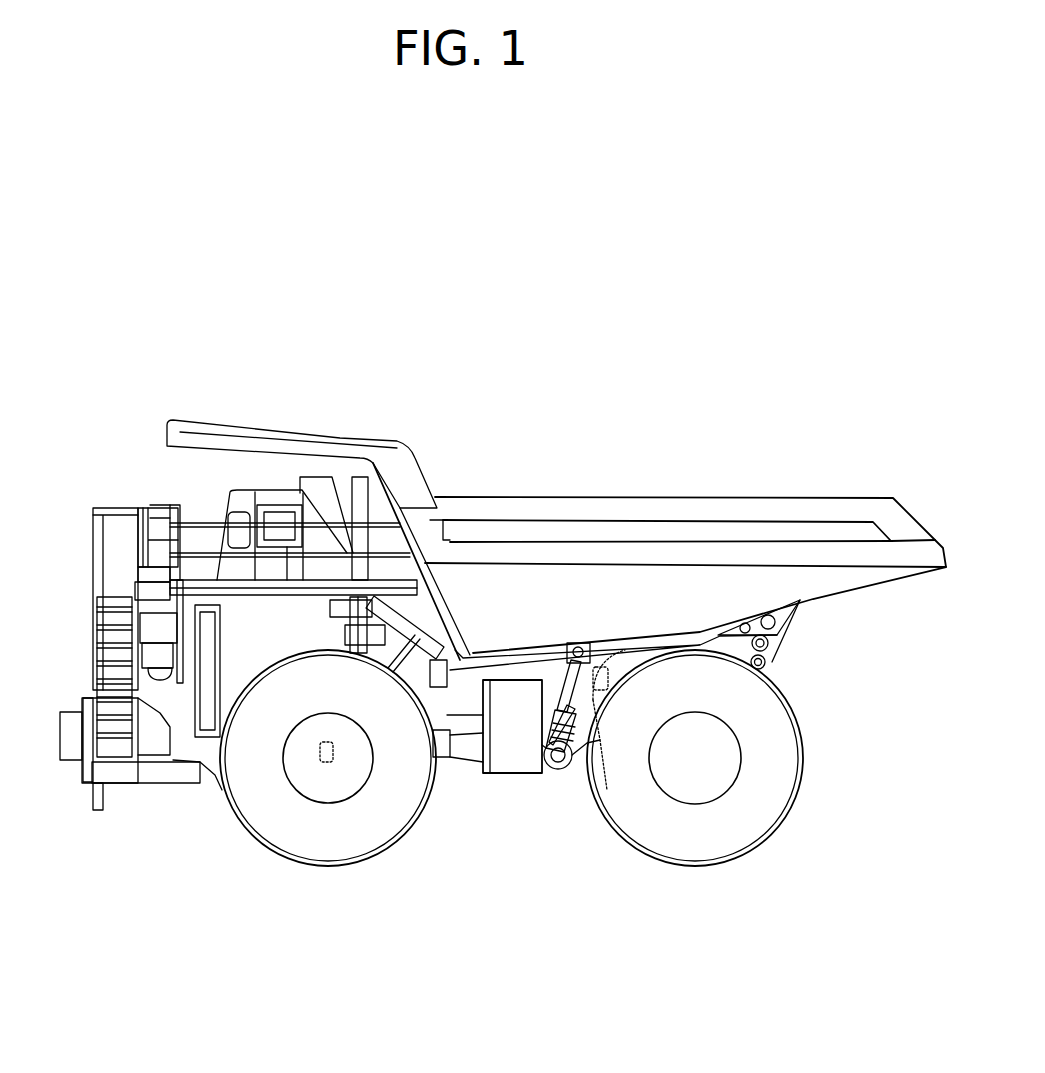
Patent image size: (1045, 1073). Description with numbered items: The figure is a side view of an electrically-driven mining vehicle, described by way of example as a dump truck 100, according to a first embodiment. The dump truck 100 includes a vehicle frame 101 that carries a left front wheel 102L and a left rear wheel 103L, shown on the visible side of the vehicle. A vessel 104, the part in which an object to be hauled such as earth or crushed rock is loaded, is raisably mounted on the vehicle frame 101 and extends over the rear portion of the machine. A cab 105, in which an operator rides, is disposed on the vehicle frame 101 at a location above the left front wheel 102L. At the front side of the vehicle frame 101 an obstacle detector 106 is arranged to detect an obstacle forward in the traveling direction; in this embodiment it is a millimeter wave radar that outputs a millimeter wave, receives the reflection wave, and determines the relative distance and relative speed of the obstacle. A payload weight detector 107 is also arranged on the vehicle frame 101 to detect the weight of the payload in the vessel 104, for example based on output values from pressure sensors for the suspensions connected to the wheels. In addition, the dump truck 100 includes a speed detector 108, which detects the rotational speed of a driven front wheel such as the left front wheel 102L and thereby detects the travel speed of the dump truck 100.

The electrically-driven mining vehicle (dump truck) 100 is at (593, 385).
The vehicle frame 101 is at (437, 708).
The left front wheel 102L is at (287, 833).
The left rear wheel 103L is at (710, 837).
The vessel 104 is at (800, 575).
The cab 105 is at (237, 503).
The obstacle detector 106 is at (80, 755).
The payload weight detector 107 is at (335, 755).
The speed detector 108 is at (598, 800).